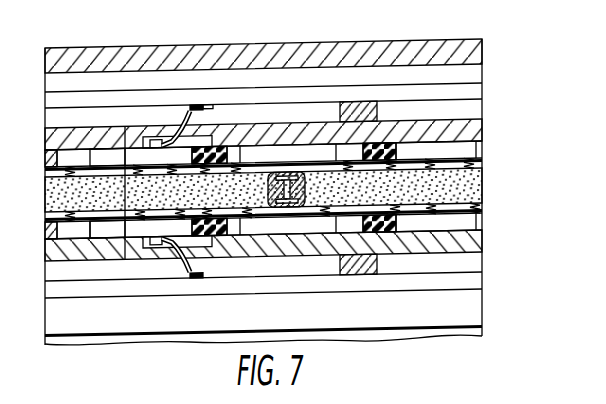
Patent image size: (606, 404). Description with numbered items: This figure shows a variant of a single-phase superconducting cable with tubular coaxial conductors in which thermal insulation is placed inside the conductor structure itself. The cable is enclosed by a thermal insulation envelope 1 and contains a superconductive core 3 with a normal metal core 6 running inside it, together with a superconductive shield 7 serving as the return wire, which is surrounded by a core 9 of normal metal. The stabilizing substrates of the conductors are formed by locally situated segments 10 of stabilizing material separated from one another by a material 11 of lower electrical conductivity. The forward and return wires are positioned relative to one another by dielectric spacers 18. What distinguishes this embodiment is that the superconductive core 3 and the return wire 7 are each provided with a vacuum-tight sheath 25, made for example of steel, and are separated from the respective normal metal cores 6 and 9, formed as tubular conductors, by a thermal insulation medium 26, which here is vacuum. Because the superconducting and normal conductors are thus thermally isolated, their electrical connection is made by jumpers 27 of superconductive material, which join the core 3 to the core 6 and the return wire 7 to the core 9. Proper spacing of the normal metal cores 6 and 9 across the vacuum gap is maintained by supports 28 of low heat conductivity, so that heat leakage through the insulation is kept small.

The thermal insulation envelope 1 is at (263, 40).
The superconductive core 3 is at (273, 252).
The normal metal core 6 is at (263, 335).
The superconductive shield 7 is at (263, 135).
The normal metal core 9 is at (177, 78).
The stabilizing material segments 10 is at (114, 190).
The lower conductivity material 11 is at (192, 237).
The dielectric spacer 18 is at (299, 174).
The vacuum-tight sheath 25 is at (280, 173).
The thermal insulation medium 26 is at (250, 190).
The jumper 27 is at (231, 139).
The support 28 is at (361, 138).